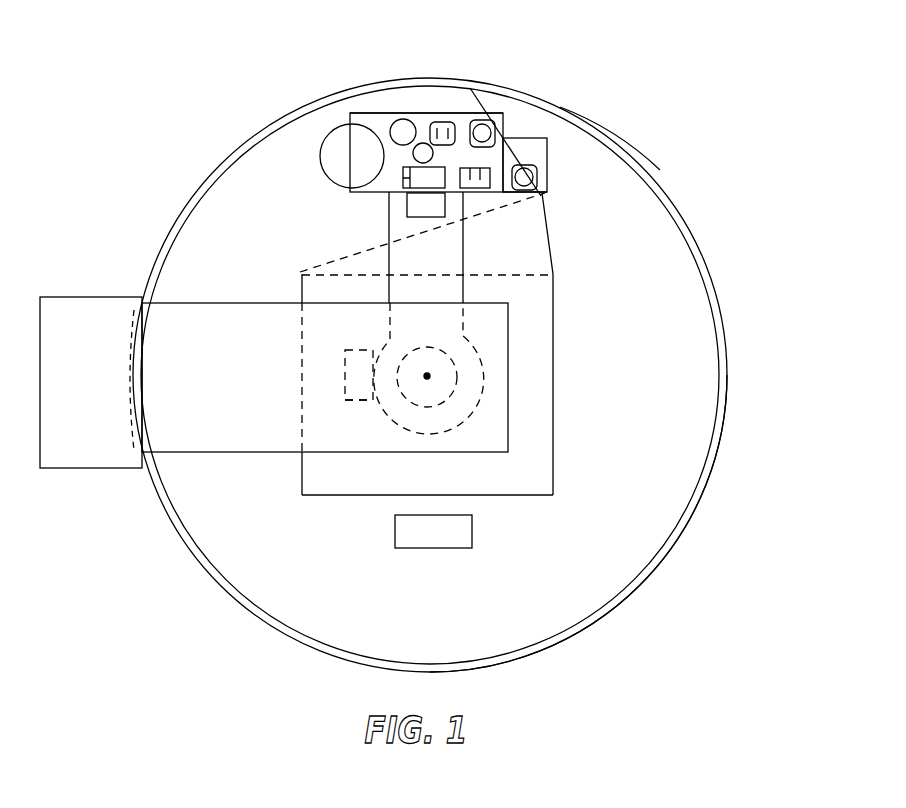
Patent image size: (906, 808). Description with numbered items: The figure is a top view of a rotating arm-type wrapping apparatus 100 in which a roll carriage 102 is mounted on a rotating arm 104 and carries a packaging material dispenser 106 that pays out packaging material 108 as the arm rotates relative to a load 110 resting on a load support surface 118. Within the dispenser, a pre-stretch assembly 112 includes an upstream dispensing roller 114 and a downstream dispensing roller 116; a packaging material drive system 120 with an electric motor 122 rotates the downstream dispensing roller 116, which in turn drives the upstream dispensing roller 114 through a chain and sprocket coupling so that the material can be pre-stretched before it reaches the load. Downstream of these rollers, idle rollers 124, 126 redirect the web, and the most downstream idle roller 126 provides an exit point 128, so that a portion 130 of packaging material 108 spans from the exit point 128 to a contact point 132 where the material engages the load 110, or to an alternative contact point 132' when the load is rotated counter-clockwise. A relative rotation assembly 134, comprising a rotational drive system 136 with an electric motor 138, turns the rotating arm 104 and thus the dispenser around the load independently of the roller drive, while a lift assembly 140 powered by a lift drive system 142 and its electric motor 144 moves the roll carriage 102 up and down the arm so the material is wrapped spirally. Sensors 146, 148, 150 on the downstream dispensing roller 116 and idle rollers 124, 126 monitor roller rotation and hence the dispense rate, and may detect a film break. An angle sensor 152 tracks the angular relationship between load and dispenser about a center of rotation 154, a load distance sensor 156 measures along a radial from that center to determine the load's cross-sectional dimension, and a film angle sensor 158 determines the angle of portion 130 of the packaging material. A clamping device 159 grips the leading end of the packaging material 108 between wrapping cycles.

The rotating arm-type wrapping apparatus 100 is at (149, 136).
The roll carriage 102 is at (395, 124).
The rotating arm 104 is at (452, 288).
The packaging material dispenser 106 is at (382, 128).
The packaging material 108 is at (318, 158).
The load 110 is at (518, 494).
The pre-stretch assembly 112 is at (410, 104).
The upstream dispensing roller 114 is at (390, 113).
The downstream dispensing roller 116 is at (423, 142).
The load support surface 118 is at (680, 460).
The packaging material drive system 120 is at (400, 178).
The electric motor 122 is at (395, 192).
The idle roller 124 is at (500, 115).
The idle roller 126 is at (505, 138).
The exit point 128 is at (540, 195).
The portion of packaging material 130 is at (545, 218).
The contact point 132 is at (459, 272).
The contact point 132' is at (388, 241).
The relative rotation assembly 134 is at (474, 424).
The rotational drive system 136 is at (340, 368).
The electric motor 138 is at (362, 400).
The lift assembly 140 is at (487, 192).
The lift drive system 142 is at (447, 200).
The electric motor 144 is at (438, 222).
The sensor 146 is at (447, 113).
The sensor 148 is at (521, 165).
The sensor 150 is at (616, 153).
The angle sensor 152 is at (448, 350).
The center of rotation 154 is at (428, 377).
The load distance sensor 156 is at (472, 120).
The film angle sensor 158 is at (489, 133).
The clamping device 159 is at (407, 528).